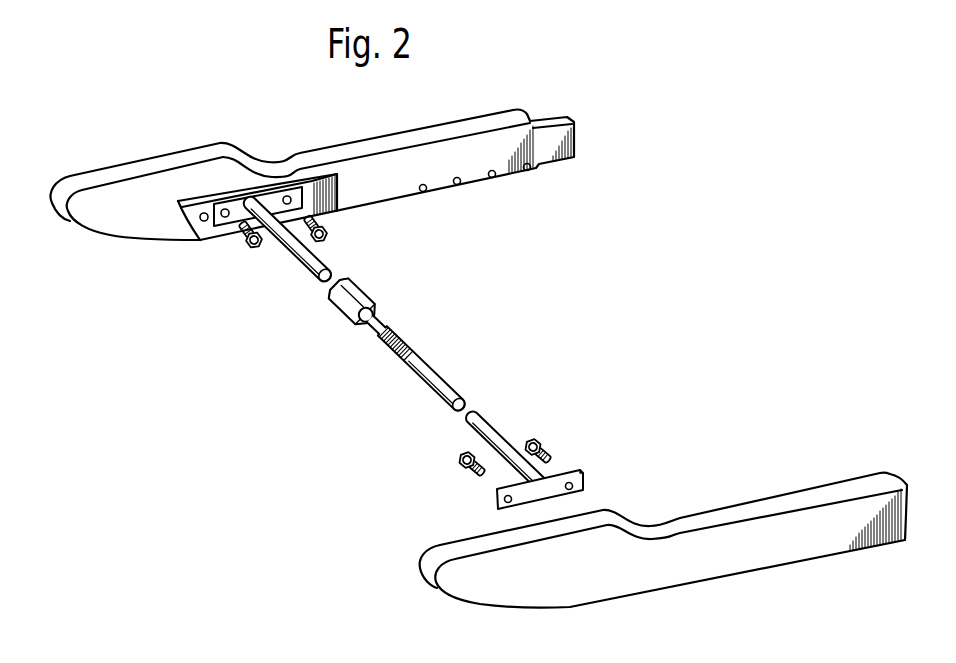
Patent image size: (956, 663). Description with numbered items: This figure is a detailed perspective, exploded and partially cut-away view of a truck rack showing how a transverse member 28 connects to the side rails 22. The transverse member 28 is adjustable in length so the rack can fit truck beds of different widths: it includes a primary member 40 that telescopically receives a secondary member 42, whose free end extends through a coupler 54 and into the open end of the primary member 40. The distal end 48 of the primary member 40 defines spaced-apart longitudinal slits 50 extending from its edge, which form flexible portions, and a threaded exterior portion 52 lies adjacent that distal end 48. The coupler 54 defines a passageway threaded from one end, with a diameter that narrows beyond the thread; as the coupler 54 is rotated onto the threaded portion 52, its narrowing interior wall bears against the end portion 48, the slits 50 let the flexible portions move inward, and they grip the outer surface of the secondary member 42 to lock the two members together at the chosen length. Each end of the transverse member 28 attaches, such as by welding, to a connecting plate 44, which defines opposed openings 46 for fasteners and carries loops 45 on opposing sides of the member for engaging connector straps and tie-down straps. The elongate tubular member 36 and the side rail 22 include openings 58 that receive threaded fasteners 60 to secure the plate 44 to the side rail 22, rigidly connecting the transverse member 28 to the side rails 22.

The side rail 22 is at (358, 143).
The transverse member 28 is at (414, 398).
The elongate tubular member 36 is at (324, 208).
The primary member 40 is at (443, 354).
The secondary member 42 is at (320, 263).
The connecting plate 44 is at (556, 497).
The loops 45 is at (287, 195).
The openings 46 is at (582, 477).
The distal end 48 is at (382, 319).
The longitudinal slits 50 is at (393, 323).
The threaded exterior portion 52 is at (407, 330).
The coupler 54 is at (352, 291).
The openings 58 is at (203, 212).
The threaded fasteners 60 is at (260, 252).